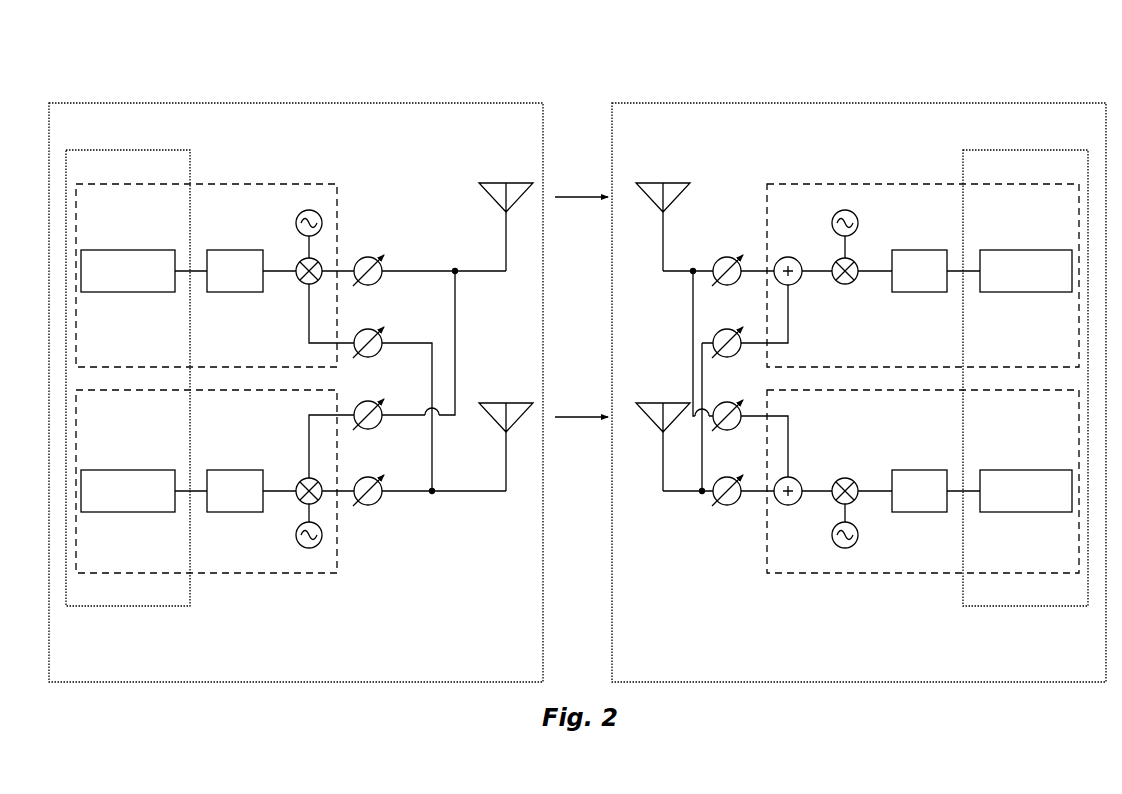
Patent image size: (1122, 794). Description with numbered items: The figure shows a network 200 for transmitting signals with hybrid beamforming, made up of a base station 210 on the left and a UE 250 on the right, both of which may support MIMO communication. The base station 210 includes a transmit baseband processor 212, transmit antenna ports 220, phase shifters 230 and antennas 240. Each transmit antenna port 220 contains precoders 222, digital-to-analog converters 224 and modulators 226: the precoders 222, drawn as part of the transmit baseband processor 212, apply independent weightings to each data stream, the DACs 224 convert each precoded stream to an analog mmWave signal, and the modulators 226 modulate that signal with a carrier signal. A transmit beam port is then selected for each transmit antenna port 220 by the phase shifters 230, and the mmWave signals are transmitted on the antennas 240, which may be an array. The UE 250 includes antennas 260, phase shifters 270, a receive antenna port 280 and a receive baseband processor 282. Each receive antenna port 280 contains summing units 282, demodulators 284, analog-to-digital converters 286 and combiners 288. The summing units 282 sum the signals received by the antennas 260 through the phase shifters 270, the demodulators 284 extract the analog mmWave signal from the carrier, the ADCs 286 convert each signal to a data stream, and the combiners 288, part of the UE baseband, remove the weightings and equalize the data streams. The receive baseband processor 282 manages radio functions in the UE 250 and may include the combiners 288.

The network 200 is at (1032, 30).
The base station 210 is at (283, 97).
The transmit baseband processor 212 is at (133, 610).
The transmit antenna ports 220 is at (270, 180).
The precoders 222 is at (131, 298).
The digital-to-analog converters (DACs) 224 is at (238, 298).
The modulators 226 is at (283, 225).
The phase shifters 230 is at (373, 243).
The antennas 240 is at (508, 177).
The UE 250 is at (845, 97).
The antennas 260 is at (666, 177).
The phase shifters 270 is at (728, 244).
The receive antenna port 280 is at (834, 180).
The summing units / receive baseband processor 282 is at (790, 244).
The demodulators 284 is at (873, 224).
The analog-to-digital converters (ADCs) 286 is at (914, 298).
The combiners 288 is at (1027, 298).